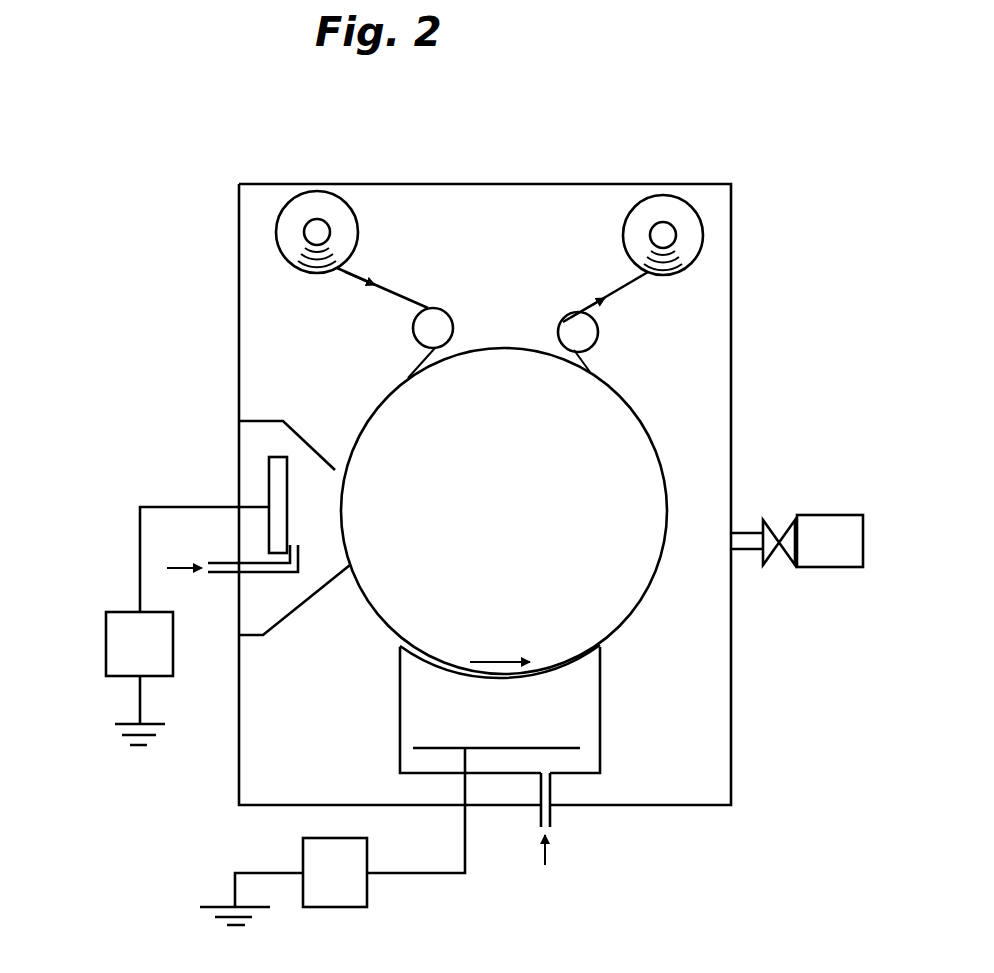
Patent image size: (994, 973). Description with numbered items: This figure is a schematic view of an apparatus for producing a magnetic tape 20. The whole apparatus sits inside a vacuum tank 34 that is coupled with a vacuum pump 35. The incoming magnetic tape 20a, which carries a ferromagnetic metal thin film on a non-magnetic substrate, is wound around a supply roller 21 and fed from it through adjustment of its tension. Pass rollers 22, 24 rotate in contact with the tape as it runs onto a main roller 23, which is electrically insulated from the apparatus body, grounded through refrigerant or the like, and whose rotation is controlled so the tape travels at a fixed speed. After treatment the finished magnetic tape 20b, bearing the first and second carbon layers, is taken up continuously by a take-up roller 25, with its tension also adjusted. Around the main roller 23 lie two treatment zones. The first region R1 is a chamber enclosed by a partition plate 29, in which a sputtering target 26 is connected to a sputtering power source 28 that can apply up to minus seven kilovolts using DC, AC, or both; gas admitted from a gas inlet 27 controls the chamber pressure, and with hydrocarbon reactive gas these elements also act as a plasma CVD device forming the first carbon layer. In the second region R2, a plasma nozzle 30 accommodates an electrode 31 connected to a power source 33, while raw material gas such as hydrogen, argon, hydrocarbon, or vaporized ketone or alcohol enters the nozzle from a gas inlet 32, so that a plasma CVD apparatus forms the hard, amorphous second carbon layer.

The magnetic tape 20 is at (577, 305).
The magnetic tape 20a is at (382, 293).
The magnetic tape 20b is at (598, 303).
The supply roller 21 is at (322, 232).
The pass rollers 22 is at (437, 320).
The main roller 23 is at (582, 505).
The guide roller 24 is at (588, 333).
The take-up roller 25 is at (658, 236).
The sputtering target 26 is at (268, 472).
The gas inlet 27 is at (229, 551).
The sputtering power source 28 is at (160, 665).
The partition plate 29 is at (288, 423).
The plasma nozzle 30 is at (600, 670).
The electrode 31 is at (565, 748).
The gas inlet 32 is at (568, 825).
The power source 33 is at (357, 891).
The vacuum tank 34 is at (731, 698).
The vacuum pump 35 is at (852, 562).
The first region R1 is at (310, 527).
The second region R2 is at (498, 705).